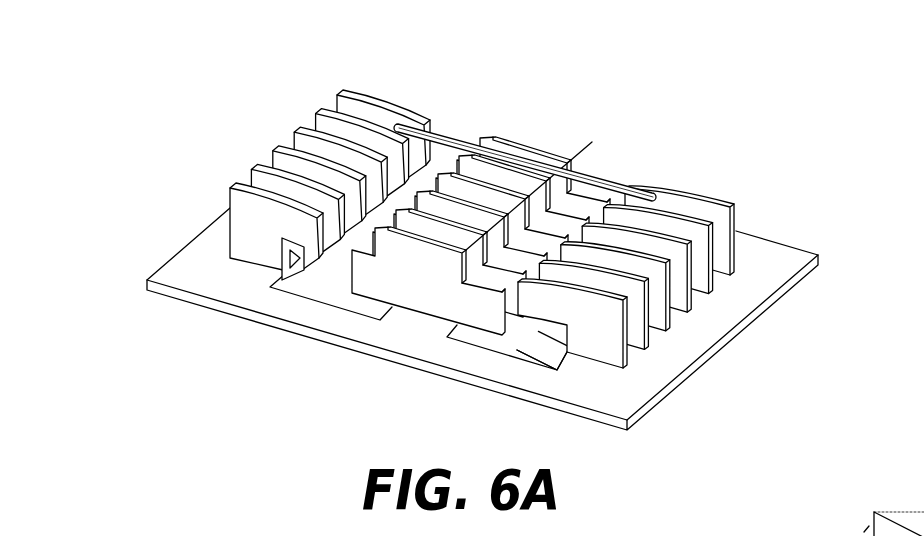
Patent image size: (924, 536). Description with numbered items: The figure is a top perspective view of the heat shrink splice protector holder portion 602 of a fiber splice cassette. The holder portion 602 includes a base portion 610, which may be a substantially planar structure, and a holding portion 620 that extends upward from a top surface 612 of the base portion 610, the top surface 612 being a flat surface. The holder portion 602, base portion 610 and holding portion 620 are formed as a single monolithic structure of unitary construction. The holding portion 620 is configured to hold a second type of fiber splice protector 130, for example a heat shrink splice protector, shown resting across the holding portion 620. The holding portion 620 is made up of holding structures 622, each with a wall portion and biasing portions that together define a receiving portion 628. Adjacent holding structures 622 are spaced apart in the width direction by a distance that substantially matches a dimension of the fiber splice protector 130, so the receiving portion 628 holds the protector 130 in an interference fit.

The heat shrink splice protector holder portion 602 is at (495, 240).
The base portion 610 is at (797, 278).
The top surface 612 is at (767, 257).
The holding portion 620 is at (222, 178).
The receiving portion 628 is at (731, 271).
The fiber splice protector 130 is at (457, 153).
The holding structure 622 is at (874, 512).